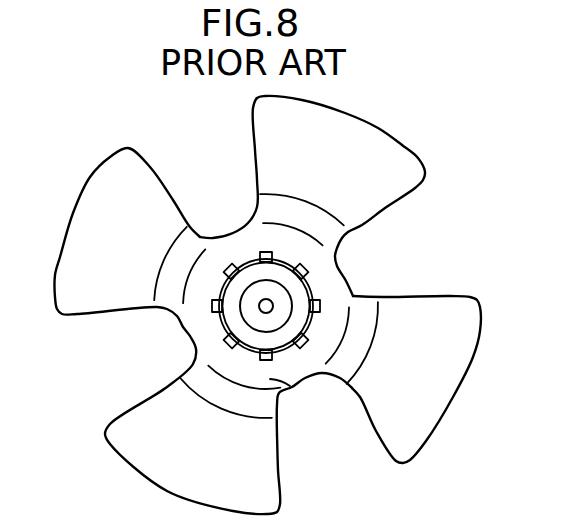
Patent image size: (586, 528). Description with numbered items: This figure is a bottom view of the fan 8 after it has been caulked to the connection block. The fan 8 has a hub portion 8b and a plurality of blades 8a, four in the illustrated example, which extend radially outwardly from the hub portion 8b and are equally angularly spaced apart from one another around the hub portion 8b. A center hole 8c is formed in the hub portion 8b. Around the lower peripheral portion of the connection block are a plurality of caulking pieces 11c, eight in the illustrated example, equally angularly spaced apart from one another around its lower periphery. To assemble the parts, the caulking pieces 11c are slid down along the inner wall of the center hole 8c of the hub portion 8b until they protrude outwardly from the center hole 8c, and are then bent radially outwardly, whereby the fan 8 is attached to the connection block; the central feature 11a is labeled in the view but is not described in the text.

The fan 8 is at (197, 322).
The blades 8a is at (383, 147).
The hub portion 8b is at (288, 387).
The center hole 8c is at (228, 331).
The rotor shaft 11a is at (267, 306).
The caulking pieces 11c is at (266, 254).